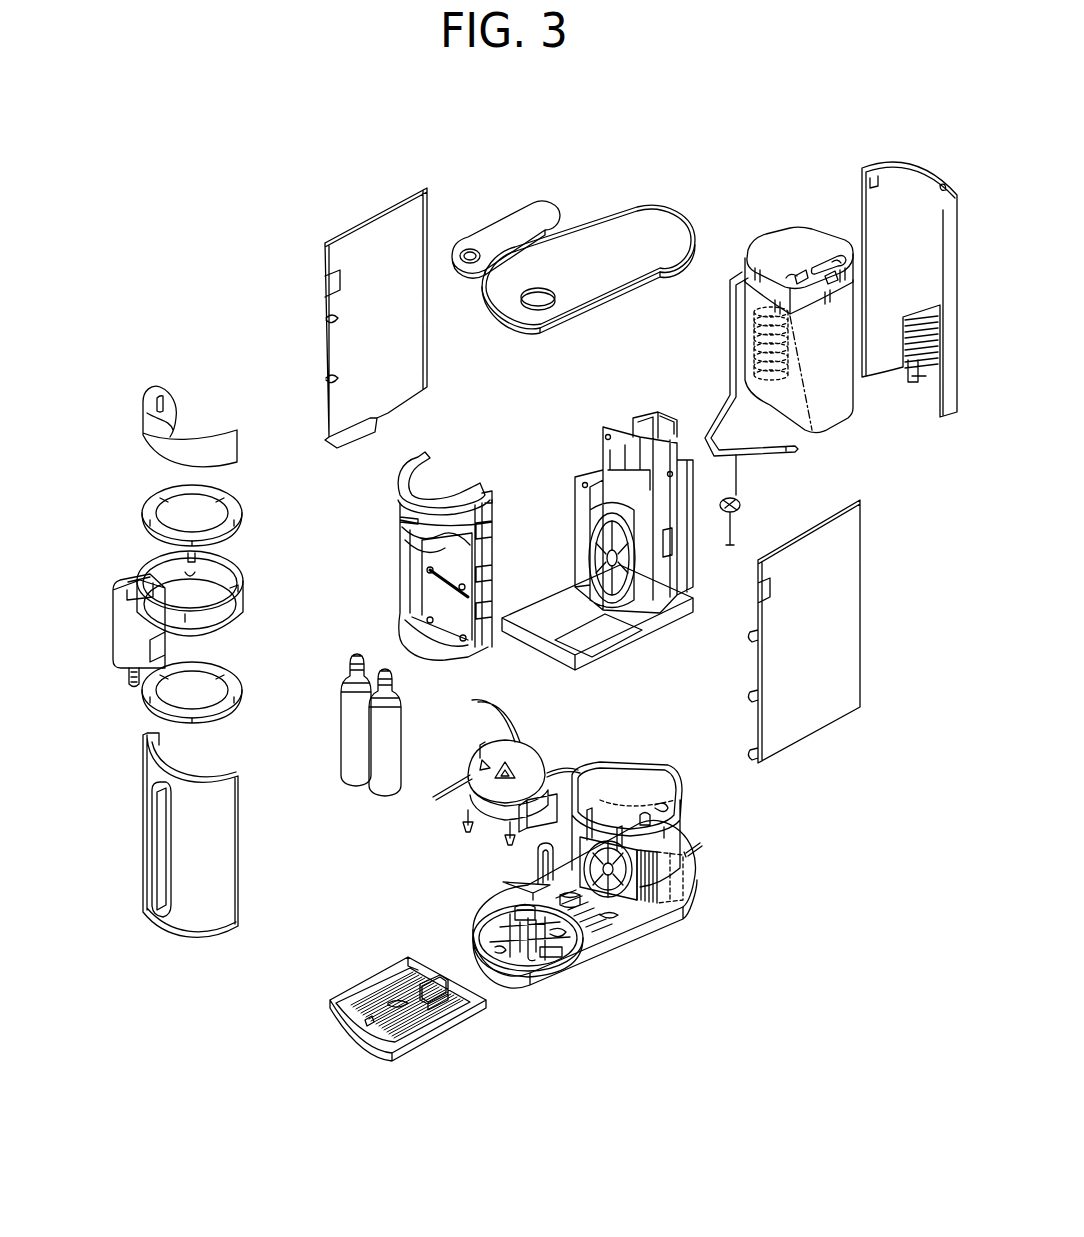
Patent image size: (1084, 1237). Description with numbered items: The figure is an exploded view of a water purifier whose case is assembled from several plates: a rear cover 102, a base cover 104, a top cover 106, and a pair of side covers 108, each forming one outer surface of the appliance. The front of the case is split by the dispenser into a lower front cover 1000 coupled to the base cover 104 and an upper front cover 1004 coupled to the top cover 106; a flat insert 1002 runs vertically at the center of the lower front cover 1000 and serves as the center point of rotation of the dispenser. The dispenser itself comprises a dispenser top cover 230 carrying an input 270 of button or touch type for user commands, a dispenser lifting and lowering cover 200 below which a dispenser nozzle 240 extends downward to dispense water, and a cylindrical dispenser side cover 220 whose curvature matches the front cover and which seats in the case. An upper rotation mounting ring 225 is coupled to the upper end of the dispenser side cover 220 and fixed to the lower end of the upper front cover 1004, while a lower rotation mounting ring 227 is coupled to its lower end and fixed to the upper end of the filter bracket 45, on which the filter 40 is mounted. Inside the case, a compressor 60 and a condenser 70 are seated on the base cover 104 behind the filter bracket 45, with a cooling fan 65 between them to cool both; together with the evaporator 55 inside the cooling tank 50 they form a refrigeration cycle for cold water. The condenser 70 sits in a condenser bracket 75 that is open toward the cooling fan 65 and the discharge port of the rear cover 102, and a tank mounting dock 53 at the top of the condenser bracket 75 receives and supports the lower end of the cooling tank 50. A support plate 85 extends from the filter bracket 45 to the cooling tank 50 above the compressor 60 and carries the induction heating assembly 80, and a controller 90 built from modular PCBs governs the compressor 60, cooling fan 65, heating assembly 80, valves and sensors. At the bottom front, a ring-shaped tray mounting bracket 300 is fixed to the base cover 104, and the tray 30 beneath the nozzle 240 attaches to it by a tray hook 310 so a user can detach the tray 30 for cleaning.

The tray 30 is at (341, 1038).
The filter 40 is at (353, 762).
The filter bracket 45 is at (487, 620).
The cooling tank 50 is at (842, 393).
The tank mounting dock 53 is at (622, 770).
The evaporator 55 is at (753, 330).
The compressor 60 is at (506, 784).
The cooling fan 65 is at (647, 920).
The condenser 70 is at (685, 873).
The condenser bracket 75 is at (689, 855).
The induction heating assembly 80 is at (617, 477).
The support plate 85 is at (541, 608).
The controller 90 is at (632, 430).
The rear cover 102 is at (912, 190).
The base cover 104 is at (617, 935).
The top cover 106 is at (620, 236).
The side covers 108 is at (337, 300).
The dispenser lifting and lowering cover 200 is at (118, 632).
The dispenser side cover 220 is at (241, 601).
The upper rotation mounting ring 225 is at (147, 506).
The lower rotation mounting ring 227 is at (239, 694).
The dispenser top cover 230 is at (512, 222).
The dispenser nozzle 240 is at (129, 678).
The input 270 is at (468, 247).
The tray mounting bracket 300 is at (527, 971).
The tray hook 310 is at (436, 982).
The lower front cover 1000 is at (213, 920).
The flat insert 1002 is at (160, 845).
The upper front cover 1004 is at (143, 434).